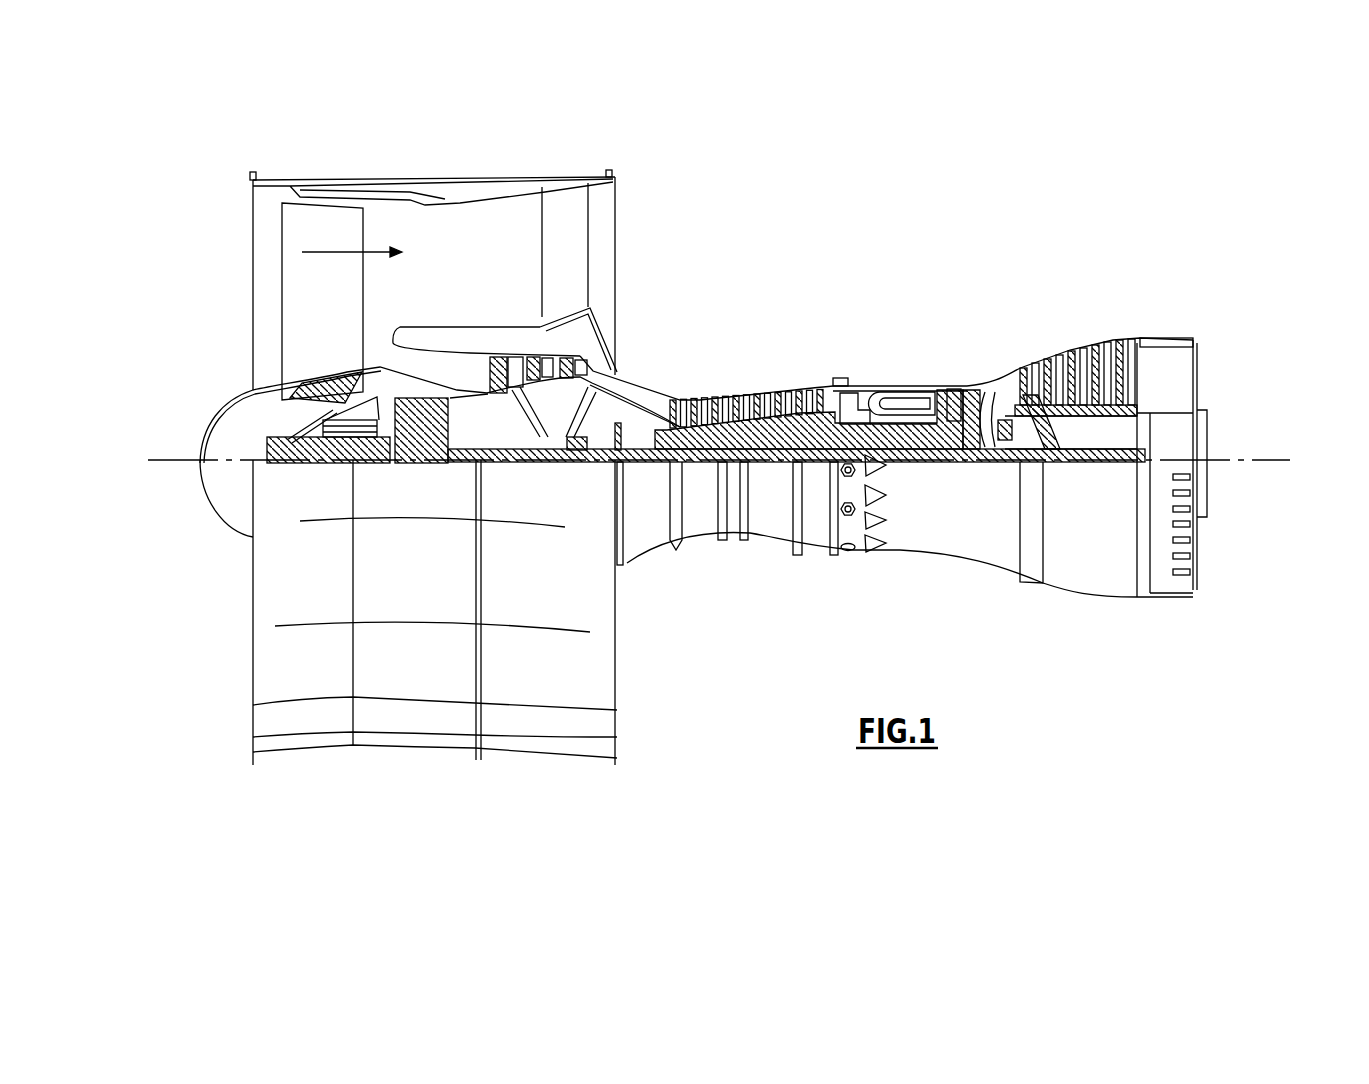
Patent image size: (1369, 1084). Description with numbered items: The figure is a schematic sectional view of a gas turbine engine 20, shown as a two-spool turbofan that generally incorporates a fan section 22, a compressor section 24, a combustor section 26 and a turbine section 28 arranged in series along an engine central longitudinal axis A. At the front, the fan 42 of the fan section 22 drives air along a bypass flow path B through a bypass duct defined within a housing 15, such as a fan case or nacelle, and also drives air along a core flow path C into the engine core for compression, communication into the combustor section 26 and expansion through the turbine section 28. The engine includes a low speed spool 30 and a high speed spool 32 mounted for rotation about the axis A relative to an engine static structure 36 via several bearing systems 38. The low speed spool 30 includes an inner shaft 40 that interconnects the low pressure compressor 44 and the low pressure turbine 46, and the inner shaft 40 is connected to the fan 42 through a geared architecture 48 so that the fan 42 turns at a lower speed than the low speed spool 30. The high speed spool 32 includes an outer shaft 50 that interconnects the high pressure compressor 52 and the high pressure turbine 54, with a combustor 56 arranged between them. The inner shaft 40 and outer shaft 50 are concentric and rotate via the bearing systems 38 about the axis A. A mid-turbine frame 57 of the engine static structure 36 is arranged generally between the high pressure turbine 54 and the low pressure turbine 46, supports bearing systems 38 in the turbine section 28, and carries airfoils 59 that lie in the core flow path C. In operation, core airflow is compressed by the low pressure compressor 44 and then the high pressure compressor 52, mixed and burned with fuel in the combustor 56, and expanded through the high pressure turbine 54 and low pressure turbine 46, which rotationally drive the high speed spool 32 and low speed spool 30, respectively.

The housing 15 is at (436, 182).
The gas turbine engine 20 is at (900, 226).
The fan section 22 is at (362, 166).
The compressor section 24 is at (665, 363).
The combustor section 26 is at (886, 348).
The turbine section 28 is at (1036, 314).
The low speed spool 30 is at (773, 477).
The high speed spool 32 is at (818, 395).
The engine static structure 36 is at (813, 562).
The bearing systems 38 is at (993, 450).
The inner shaft 40 is at (632, 462).
The fan 42 is at (337, 308).
The low pressure compressor 44 is at (543, 375).
The low pressure turbine 46 is at (1083, 342).
The geared architecture 48 is at (440, 460).
The outer shaft 50 is at (897, 456).
The high pressure compressor 52 is at (752, 400).
The high pressure turbine 54 is at (954, 383).
The combustor 56 is at (890, 406).
The mid-turbine frame 57 is at (1000, 370).
The airfoils 59 is at (1030, 430).
The engine central longitudinal axis A is at (1287, 461).
The bypass flow path B is at (340, 252).
The core flow path C is at (432, 357).